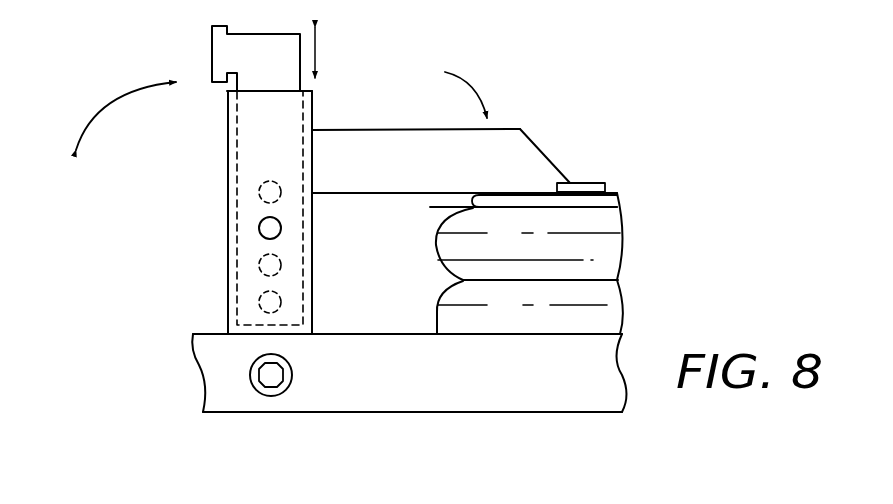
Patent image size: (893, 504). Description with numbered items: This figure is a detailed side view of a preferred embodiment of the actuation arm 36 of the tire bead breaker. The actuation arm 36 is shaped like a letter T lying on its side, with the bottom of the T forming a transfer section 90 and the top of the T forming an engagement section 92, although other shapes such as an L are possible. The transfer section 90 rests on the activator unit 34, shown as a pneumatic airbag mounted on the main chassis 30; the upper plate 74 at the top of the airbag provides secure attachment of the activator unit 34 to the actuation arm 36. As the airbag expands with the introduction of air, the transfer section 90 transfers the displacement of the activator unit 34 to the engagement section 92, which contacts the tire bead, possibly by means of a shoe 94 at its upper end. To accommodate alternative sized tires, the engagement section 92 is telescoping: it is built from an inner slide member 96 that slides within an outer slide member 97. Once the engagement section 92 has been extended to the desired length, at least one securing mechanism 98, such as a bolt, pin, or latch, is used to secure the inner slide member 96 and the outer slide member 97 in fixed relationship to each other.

The main chassis 30 is at (462, 392).
The activator unit 34 is at (585, 247).
The actuation arm 36 is at (356, 88).
The upper plate 74 is at (578, 200).
The transfer section 90 is at (500, 145).
The engagement section 92 is at (226, 131).
The shoe 94 is at (212, 45).
The inner slide member 96 is at (238, 275).
The outer slide member 97 is at (228, 227).
The securing mechanism 98 is at (262, 228).